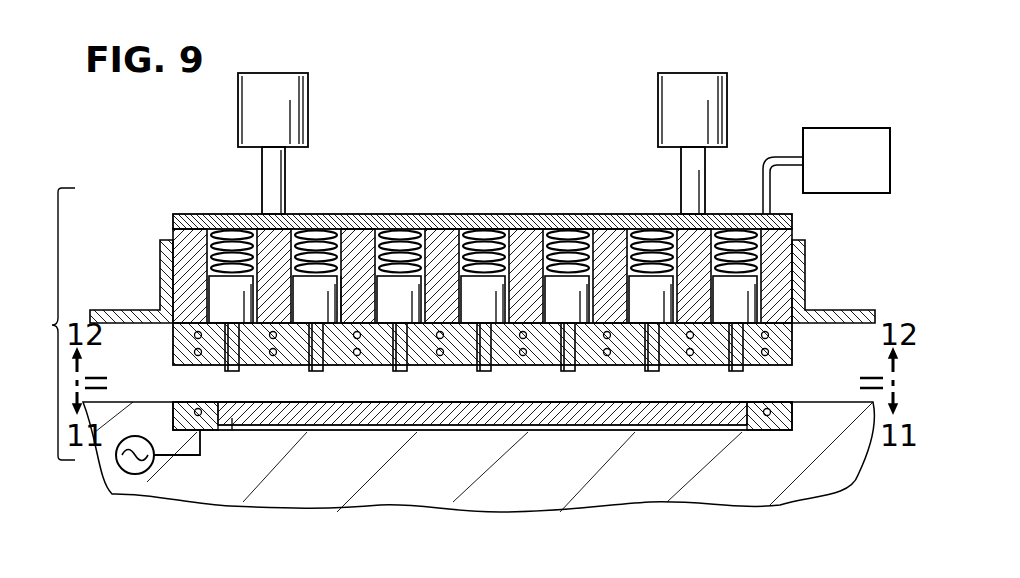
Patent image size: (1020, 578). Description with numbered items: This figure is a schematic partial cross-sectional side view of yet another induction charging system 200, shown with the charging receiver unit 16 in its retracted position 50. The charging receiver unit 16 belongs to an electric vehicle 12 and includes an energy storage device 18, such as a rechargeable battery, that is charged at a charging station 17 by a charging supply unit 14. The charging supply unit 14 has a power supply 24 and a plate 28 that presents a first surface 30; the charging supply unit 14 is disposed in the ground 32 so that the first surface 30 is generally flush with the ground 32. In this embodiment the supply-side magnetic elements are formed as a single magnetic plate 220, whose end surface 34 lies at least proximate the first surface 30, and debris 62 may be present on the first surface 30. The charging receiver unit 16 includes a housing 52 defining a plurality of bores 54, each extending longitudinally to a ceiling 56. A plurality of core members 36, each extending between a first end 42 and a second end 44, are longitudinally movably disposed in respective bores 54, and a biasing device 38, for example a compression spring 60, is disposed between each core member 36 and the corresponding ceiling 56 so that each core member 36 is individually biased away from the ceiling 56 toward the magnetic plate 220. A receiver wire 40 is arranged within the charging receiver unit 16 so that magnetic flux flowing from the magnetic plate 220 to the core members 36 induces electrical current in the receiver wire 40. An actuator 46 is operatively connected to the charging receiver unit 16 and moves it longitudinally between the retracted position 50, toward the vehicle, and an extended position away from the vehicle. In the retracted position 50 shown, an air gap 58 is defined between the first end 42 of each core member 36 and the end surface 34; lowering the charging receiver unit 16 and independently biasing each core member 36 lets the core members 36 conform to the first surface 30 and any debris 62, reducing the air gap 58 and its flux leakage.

The electric vehicle 12 is at (108, 164).
The charging supply unit 14 is at (127, 487).
The charging receiver unit 16 is at (183, 196).
The charging station 17 is at (177, 468).
The energy storage device 18 is at (826, 171).
The power supply 24 is at (130, 467).
The plate 28 is at (760, 424).
The first surface 30 is at (778, 401).
The ground 32 is at (860, 482).
The end surface 34 is at (233, 400).
The core member 36 is at (325, 292).
The biasing device 38 is at (468, 257).
The receiver wire 40 is at (198, 357).
The first end 42 is at (232, 372).
The second end 44 is at (206, 257).
The actuator 46 is at (689, 85).
The retracted position 50 is at (128, 298).
The housing 52 is at (523, 242).
The bore 54 is at (578, 238).
The ceiling 56 is at (342, 212).
The air gap 58 is at (775, 378).
The compression spring 60 is at (490, 228).
The debris 62 is at (485, 394).
The induction charging system 200 is at (47, 324).
The magnetic plate 220 is at (232, 418).